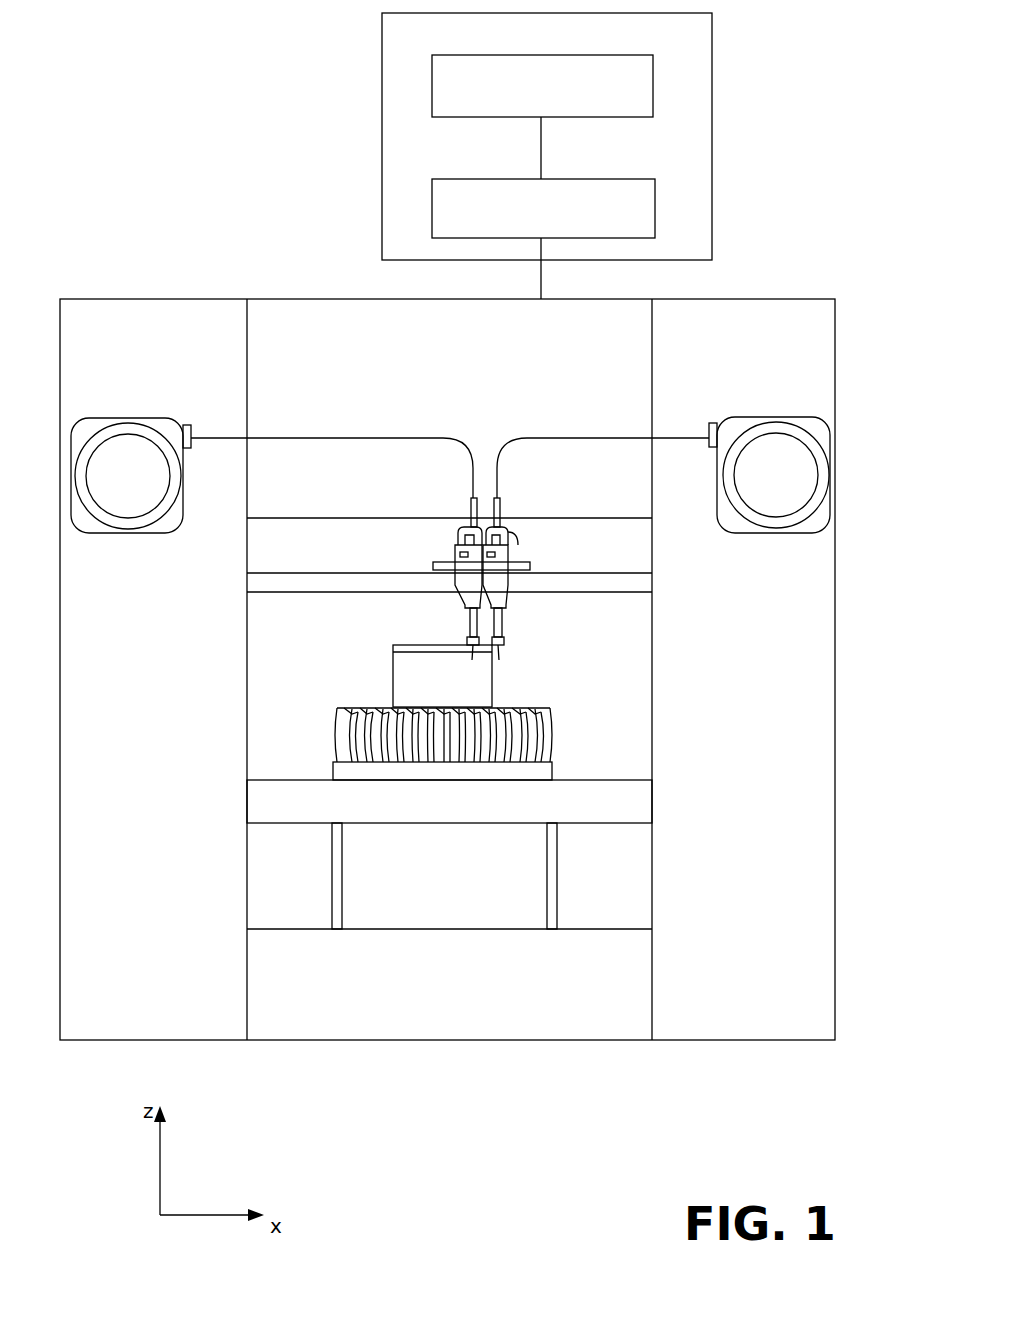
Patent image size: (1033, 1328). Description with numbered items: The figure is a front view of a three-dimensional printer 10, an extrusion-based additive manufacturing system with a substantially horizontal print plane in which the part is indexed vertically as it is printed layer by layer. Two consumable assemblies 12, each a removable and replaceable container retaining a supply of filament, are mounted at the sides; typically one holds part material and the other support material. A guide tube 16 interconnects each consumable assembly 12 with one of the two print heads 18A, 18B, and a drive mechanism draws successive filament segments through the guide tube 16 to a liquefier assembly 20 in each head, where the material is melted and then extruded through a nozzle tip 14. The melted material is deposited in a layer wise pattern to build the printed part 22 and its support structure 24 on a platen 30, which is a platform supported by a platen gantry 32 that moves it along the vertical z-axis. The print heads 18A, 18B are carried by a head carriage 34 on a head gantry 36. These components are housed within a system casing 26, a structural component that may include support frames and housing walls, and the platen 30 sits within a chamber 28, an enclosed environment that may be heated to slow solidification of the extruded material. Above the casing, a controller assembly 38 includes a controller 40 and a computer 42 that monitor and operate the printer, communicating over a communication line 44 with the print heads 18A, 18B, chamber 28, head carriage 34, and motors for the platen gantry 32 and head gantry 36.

The 3D printer 10 is at (174, 80).
The consumable assembly 12 is at (115, 418).
The nozzle tip 14 is at (472, 656).
The guide tube 16 is at (262, 438).
The print head 18A is at (450, 555).
The print head 18B is at (516, 553).
The liquefier assembly 20 is at (468, 630).
The 3D part 22 is at (400, 690).
The support structure 24 is at (547, 765).
The system casing 26 is at (247, 690).
The chamber 28 is at (240, 728).
The platen 30 is at (645, 815).
The platen gantry 32 is at (570, 912).
The head carriage 34 is at (437, 566).
The head gantry 36 is at (318, 575).
The controller assembly 38 is at (712, 37).
The controller 40 is at (655, 197).
The computer 42 is at (653, 68).
The communication line 44 is at (541, 270).